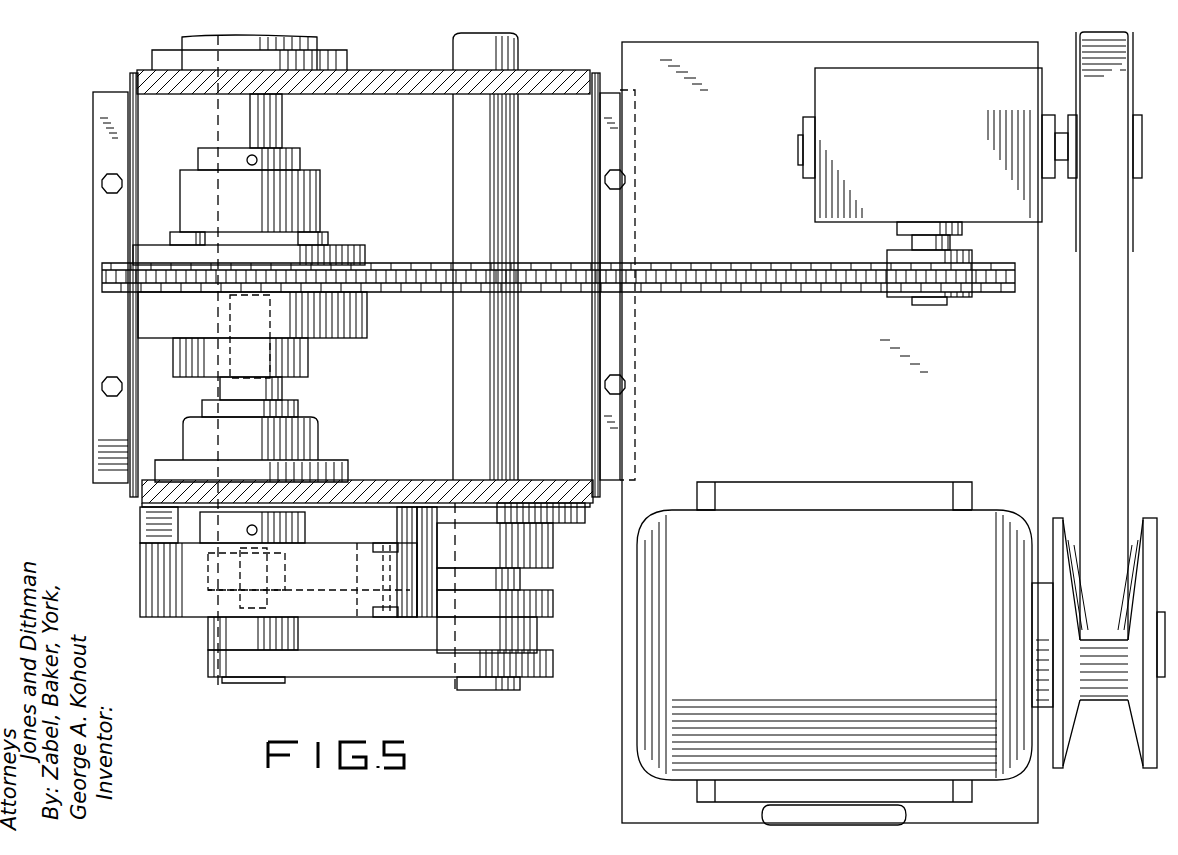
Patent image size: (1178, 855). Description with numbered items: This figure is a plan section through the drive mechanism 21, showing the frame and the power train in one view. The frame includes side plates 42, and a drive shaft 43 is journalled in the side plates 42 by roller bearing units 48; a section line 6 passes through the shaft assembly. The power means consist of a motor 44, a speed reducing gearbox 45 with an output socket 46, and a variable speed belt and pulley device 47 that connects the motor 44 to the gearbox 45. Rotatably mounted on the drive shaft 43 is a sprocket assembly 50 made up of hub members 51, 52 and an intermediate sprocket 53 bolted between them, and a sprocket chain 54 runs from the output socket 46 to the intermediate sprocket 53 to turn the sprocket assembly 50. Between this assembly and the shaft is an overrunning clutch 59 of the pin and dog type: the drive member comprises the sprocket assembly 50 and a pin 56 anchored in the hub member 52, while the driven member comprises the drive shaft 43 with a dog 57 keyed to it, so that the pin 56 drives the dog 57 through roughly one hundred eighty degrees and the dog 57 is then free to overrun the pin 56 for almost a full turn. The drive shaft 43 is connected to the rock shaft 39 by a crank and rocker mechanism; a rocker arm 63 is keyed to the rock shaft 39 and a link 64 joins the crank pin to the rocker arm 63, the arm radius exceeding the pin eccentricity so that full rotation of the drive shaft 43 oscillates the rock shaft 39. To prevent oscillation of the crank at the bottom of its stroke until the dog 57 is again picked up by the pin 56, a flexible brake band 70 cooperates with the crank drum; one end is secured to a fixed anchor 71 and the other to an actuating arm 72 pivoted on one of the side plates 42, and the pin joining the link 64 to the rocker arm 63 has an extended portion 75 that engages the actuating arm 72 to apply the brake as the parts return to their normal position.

The frame 21 is at (91, 81).
The side plates 42 is at (562, 60).
The rock shaft 39 is at (510, 337).
The roller bearing units 48 is at (340, 62).
The drive shaft 43 is at (283, 140).
The section line 6 is at (250, 130).
The sprocket assembly 50 is at (365, 232).
The hub member 51 is at (367, 256).
The intermediate sprocket 53 is at (112, 283).
The sprocket chain 54 is at (747, 292).
The hub member 52 is at (367, 318).
The pin 56 is at (230, 312).
The dog 57 is at (180, 377).
The overrunning clutch 59 is at (342, 366).
The brake band 70 is at (345, 612).
The actuating arm 72 is at (293, 563).
The extended portion 75 is at (290, 575).
The fixed anchor 71 is at (415, 615).
The link 64 is at (210, 636).
The rocker arm 63 is at (372, 668).
The speed reducing gearbox 45 is at (825, 202).
The output socket 46 is at (898, 302).
The variable speed belt and pulley device 47 is at (1140, 730).
The motor 44 is at (793, 524).